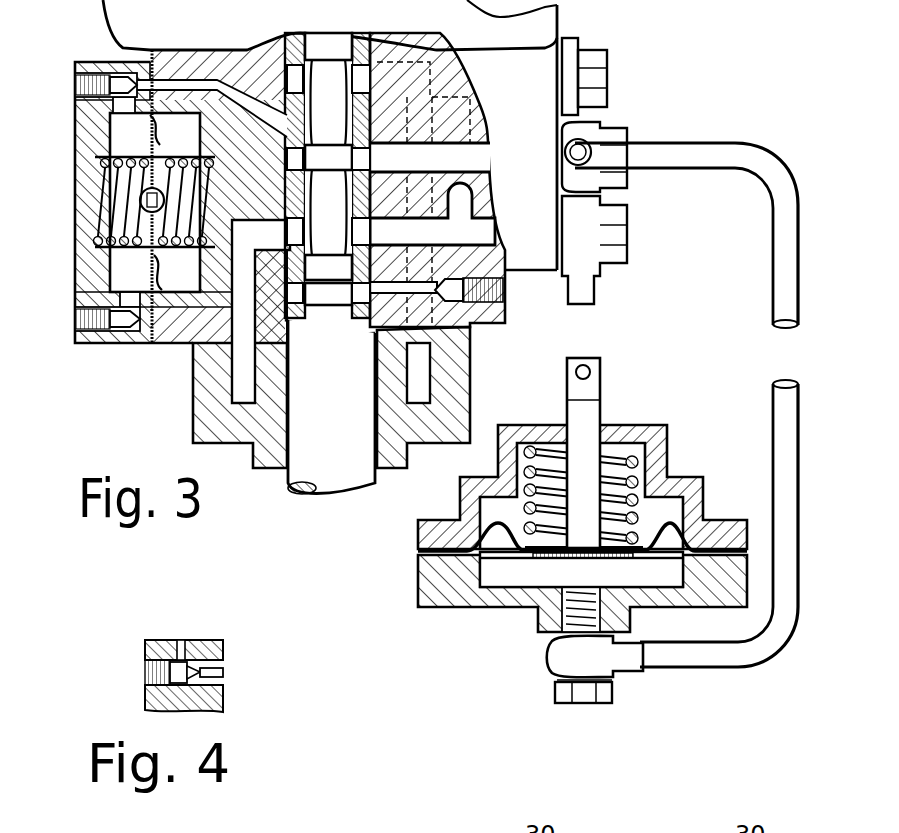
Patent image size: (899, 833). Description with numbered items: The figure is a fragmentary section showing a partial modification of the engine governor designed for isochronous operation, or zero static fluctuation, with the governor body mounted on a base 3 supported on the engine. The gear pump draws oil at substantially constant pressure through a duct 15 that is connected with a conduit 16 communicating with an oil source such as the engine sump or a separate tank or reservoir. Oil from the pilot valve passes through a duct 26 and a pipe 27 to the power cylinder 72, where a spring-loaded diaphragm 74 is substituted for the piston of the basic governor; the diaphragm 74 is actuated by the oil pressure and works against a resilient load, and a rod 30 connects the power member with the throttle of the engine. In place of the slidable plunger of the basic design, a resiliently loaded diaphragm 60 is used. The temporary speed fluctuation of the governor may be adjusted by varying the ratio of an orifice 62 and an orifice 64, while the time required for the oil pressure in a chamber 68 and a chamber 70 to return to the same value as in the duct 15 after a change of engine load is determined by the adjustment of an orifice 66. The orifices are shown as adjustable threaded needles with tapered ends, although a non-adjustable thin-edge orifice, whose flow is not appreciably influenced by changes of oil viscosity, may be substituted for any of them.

The base 3 is at (210, 405).
The duct 15 is at (200, 330).
The conduit 16 is at (596, 300).
The duct 26 is at (470, 157).
The pipe 27 is at (780, 258).
The rod 30 is at (588, 410).
The resiliently loaded diaphragm 60 is at (112, 118).
The orifice 62 is at (147, 84).
The orifice 64 is at (150, 325).
The orifice 66 is at (427, 290).
The chamber 68 is at (185, 125).
The chamber 70 is at (345, 297).
The power cylinder 72 is at (490, 573).
The spring-loaded diaphragm 74 is at (680, 505).